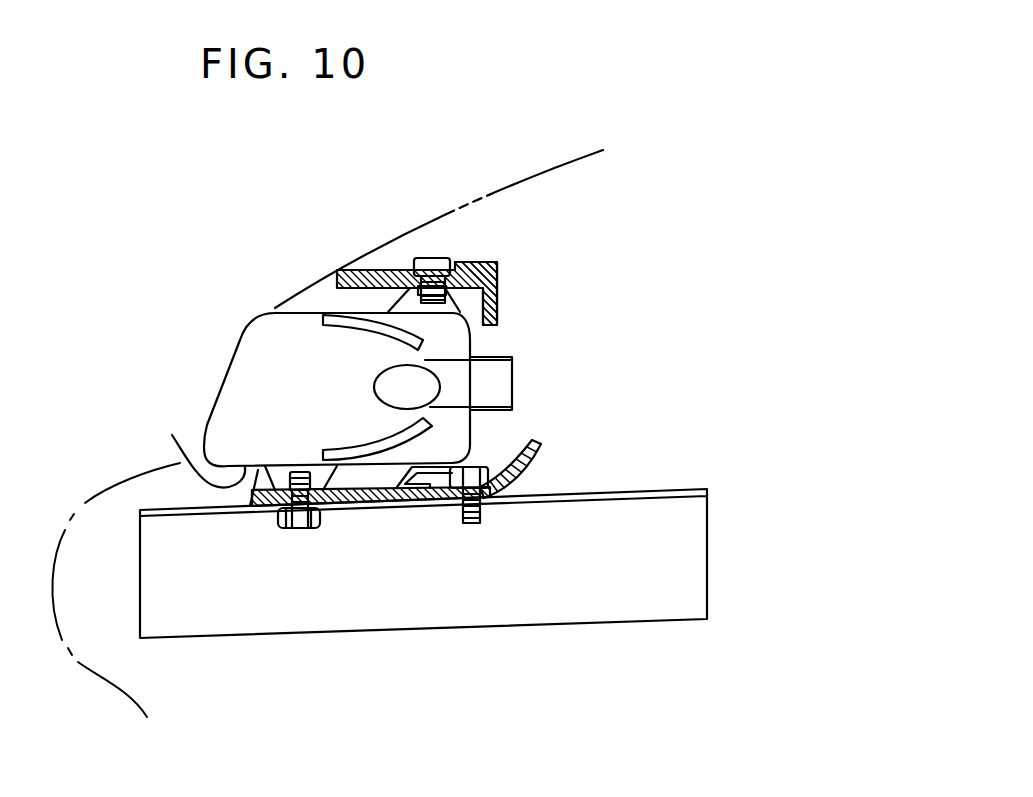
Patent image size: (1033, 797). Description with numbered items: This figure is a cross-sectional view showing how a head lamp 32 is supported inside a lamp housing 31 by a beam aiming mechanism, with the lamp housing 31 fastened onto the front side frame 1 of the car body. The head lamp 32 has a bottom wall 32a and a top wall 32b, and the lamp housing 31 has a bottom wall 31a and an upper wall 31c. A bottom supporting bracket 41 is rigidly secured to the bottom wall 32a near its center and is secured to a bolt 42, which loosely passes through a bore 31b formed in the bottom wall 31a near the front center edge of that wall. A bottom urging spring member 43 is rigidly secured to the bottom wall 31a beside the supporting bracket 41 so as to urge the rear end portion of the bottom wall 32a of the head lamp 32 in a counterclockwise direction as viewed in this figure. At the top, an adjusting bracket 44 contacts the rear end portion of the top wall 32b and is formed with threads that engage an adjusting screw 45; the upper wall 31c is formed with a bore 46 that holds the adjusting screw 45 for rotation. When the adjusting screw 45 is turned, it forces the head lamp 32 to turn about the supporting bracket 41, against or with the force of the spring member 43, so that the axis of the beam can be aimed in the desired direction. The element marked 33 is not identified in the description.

The front side frame 1 is at (565, 620).
The lamp housing 31 is at (503, 297).
The bottom wall of the lamp housing 31a is at (372, 508).
The bore 31b is at (303, 527).
The upper wall of the lamp housing 31c is at (357, 267).
The head lamp 32 is at (240, 348).
The bottom wall of the head lamp 32a is at (192, 450).
The top wall of the head lamp 32b is at (290, 310).
The spring clip 33 is at (493, 460).
The bottom supporting bracket 41 is at (264, 470).
The bolt 42 is at (297, 528).
The bottom urging spring member 43 is at (432, 508).
The adjusting bracket 44 is at (473, 255).
The adjusting screw 45 is at (432, 258).
The bore 46 is at (418, 262).